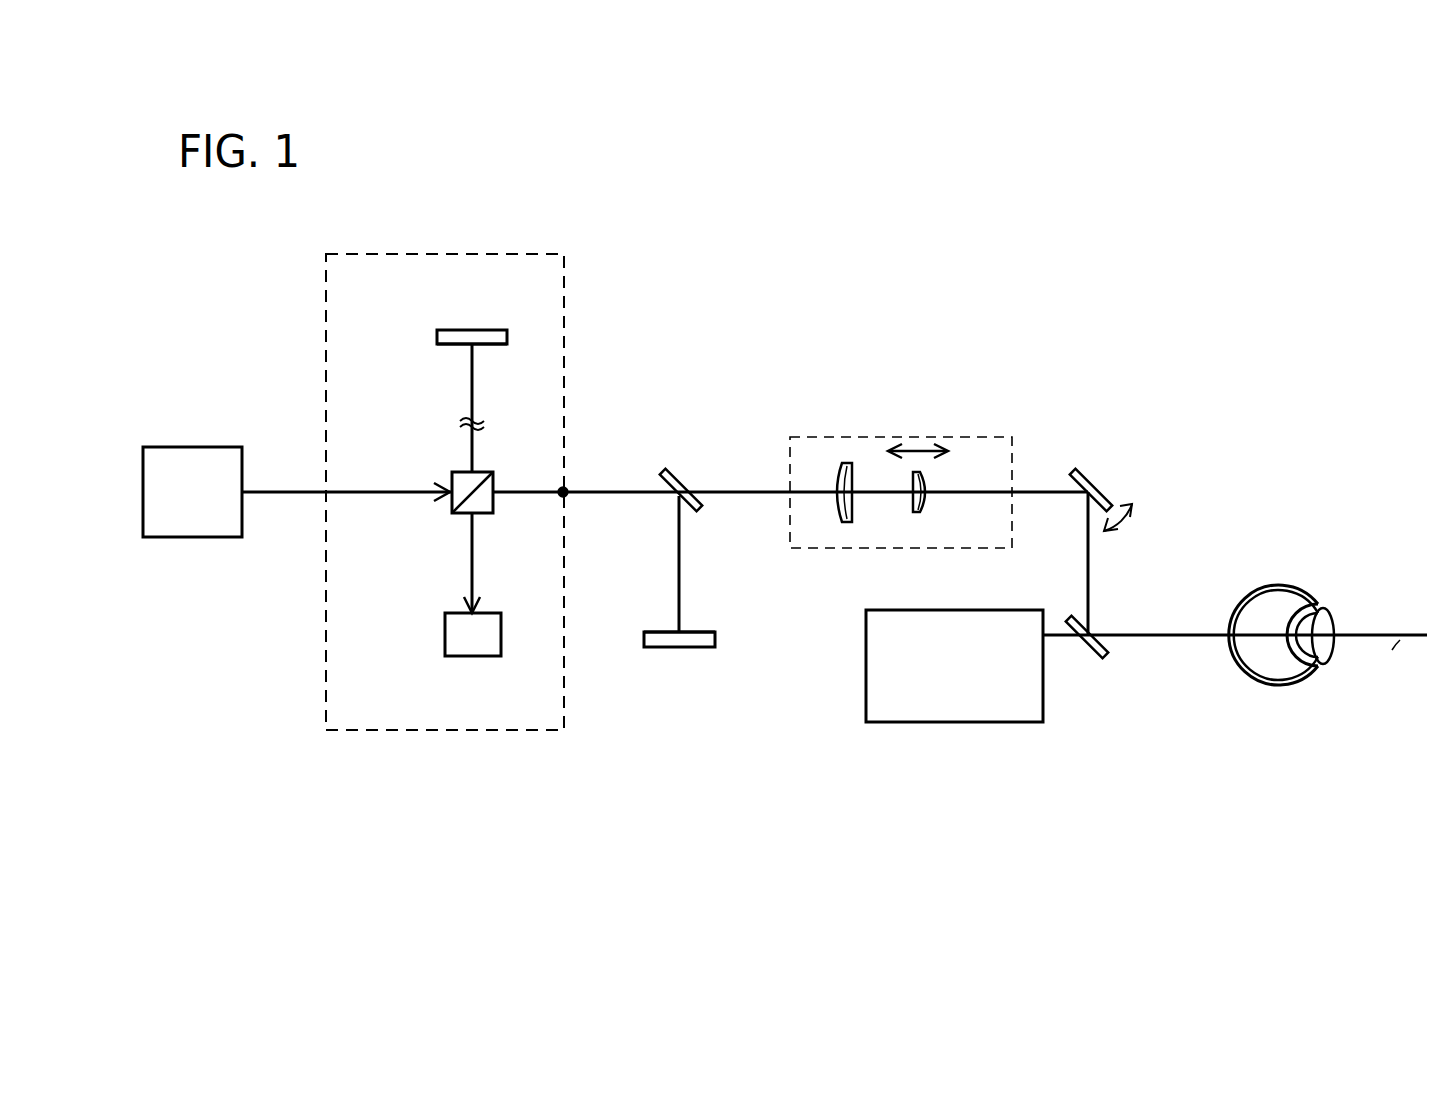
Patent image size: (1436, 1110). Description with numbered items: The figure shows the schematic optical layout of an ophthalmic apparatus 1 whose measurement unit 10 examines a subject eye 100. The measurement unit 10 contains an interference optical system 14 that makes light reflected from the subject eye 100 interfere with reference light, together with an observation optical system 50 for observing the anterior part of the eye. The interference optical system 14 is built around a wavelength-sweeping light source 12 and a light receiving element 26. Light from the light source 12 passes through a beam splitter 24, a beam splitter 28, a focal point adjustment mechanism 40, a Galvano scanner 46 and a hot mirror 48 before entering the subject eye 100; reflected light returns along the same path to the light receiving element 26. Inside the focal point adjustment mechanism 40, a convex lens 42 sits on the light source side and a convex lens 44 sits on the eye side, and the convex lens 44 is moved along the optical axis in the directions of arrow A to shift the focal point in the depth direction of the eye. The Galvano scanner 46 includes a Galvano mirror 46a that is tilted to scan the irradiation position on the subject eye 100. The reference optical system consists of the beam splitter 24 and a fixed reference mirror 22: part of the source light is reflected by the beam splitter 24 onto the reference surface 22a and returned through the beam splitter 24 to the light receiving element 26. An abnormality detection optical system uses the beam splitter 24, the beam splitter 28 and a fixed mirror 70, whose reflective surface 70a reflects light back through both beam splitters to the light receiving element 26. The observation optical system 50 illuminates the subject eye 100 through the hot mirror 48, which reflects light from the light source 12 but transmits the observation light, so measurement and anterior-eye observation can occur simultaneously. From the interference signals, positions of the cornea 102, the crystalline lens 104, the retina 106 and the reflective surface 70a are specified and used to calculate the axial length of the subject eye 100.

The ophthalmic apparatus 1 is at (1343, 208).
The measurement unit 10 is at (811, 231).
The light source 12 is at (176, 447).
The interference optical system 14 is at (928, 305).
The reference mirror 22 is at (500, 330).
The reference surface 22a is at (455, 345).
The beam splitter 24 is at (495, 476).
The light receiving element 26 is at (500, 613).
The beam splitter 28 is at (684, 480).
The mirror 70 is at (690, 648).
The reflective surface 70a is at (703, 632).
The focal point adjustment mechanism 40 is at (987, 437).
The arrow A is at (918, 445).
The convex lens 42 is at (846, 524).
The convex lens 44 is at (918, 514).
The Galvano scanner 46 is at (1140, 483).
The Galvano mirror 46a is at (1085, 470).
The hot mirror 48 is at (1087, 660).
The observation optical system 50 is at (987, 722).
The subject eye 100 is at (1363, 583).
The cornea 102 is at (1291, 652).
The crystalline lens 104 is at (1320, 648).
The retina 106 is at (1387, 650).